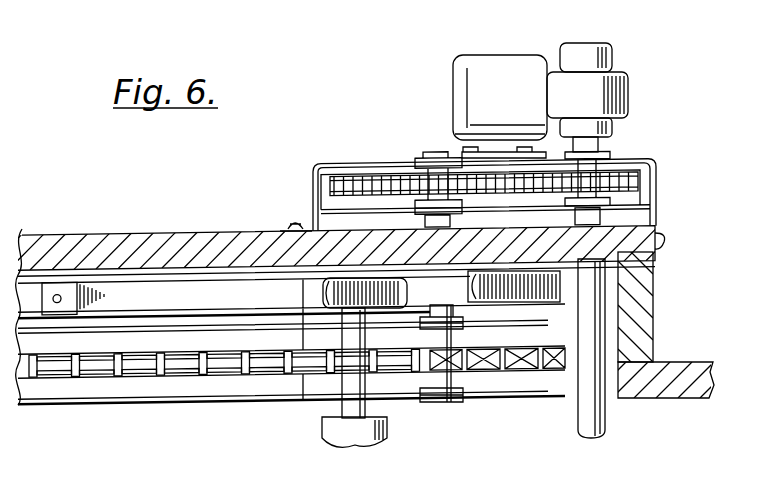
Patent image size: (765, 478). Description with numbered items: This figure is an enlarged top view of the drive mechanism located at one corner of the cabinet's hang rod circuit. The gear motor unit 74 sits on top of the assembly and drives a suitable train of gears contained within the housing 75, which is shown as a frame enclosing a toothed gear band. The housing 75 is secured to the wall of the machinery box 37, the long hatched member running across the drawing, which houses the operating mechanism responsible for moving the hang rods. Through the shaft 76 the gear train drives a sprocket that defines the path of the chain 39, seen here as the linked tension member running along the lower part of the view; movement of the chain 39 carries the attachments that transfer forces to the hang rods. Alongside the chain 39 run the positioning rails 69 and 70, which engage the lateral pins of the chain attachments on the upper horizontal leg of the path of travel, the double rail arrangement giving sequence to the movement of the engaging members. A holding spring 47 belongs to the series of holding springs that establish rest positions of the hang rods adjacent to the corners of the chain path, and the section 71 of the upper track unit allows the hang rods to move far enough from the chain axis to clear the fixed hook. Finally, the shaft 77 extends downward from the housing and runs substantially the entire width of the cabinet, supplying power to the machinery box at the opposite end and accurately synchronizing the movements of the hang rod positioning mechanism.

The machinery box 37 is at (157, 231).
The holding spring 47 is at (216, 290).
The positioning rail 69 is at (180, 327).
The positioning rail 70 is at (170, 402).
The chain 39 is at (240, 375).
The section of upper track unit 71 is at (541, 300).
The gear motor unit 74 is at (572, 48).
The housing 75 is at (657, 172).
The shaft 76 is at (455, 378).
The shaft 77 is at (602, 347).